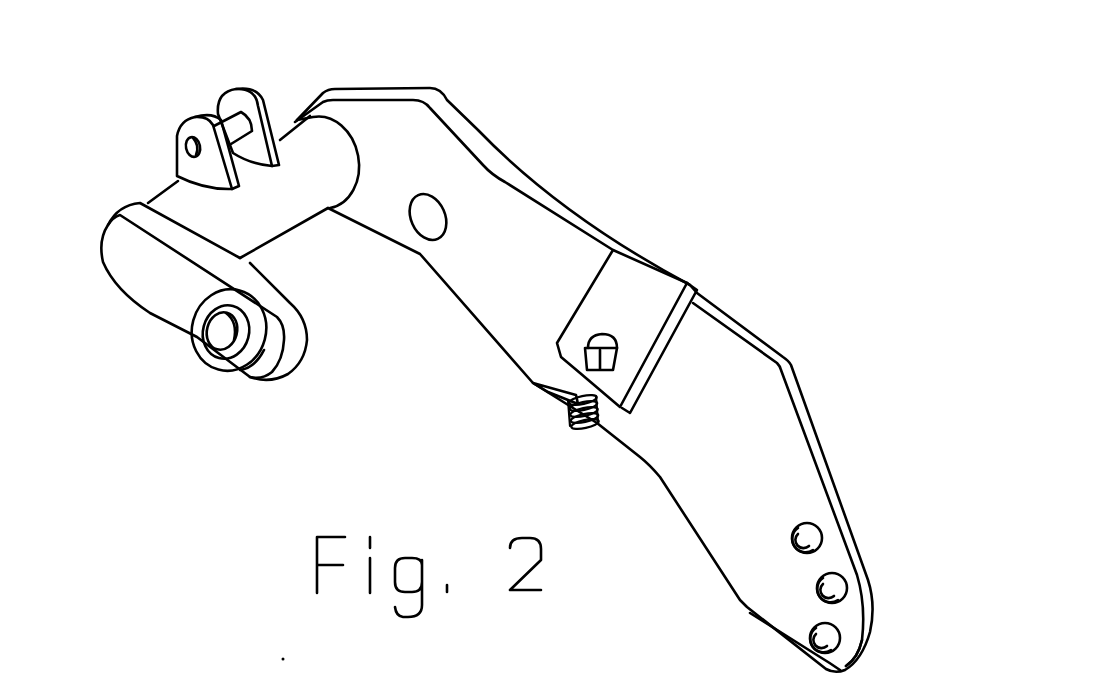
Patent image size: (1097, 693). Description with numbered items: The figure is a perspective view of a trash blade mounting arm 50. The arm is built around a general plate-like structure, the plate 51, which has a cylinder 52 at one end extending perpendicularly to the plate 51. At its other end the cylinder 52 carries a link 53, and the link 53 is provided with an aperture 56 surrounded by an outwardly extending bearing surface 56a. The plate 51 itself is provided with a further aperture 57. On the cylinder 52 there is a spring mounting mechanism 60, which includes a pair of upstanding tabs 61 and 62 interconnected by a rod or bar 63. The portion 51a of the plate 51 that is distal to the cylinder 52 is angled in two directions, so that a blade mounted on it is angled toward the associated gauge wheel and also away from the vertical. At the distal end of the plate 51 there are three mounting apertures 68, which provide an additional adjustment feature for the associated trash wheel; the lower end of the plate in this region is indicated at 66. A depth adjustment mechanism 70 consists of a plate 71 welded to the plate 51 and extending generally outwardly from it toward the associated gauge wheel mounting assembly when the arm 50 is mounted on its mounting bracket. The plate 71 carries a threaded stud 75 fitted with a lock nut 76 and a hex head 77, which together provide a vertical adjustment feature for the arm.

The trash blade mounting arm 50 is at (786, 120).
The plate 51 is at (737, 313).
The distal portion of the plate 51a is at (480, 130).
The cylinder 52 is at (300, 197).
The link 53 is at (130, 288).
The aperture 56 is at (232, 337).
The bearing surface 56a is at (228, 370).
The aperture 57 is at (437, 218).
The spring mounting mechanism 60 is at (248, 78).
The upstanding tab 61 is at (265, 103).
The upstanding tab 62 is at (190, 175).
The rod or bar 63 is at (185, 157).
The lower end of bracket 66 is at (873, 615).
The mounting apertures 68 is at (810, 530).
The depth adjustment mechanism 70 is at (692, 278).
The plate 71 is at (603, 293).
The threaded stud 75 is at (567, 417).
The lock nut 76 is at (545, 390).
The hex head 77 is at (602, 343).